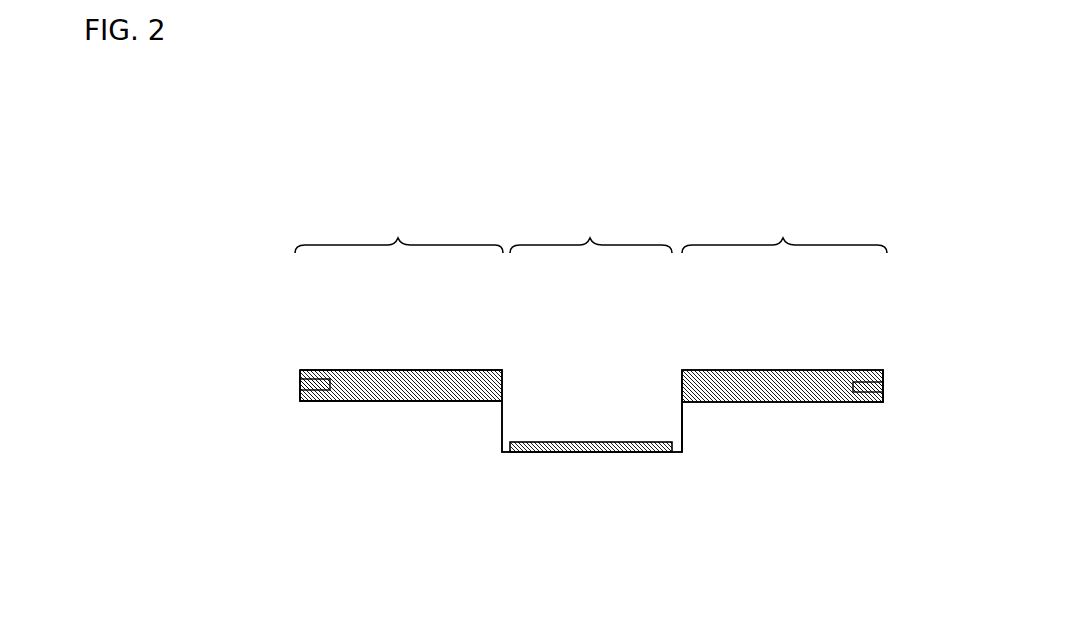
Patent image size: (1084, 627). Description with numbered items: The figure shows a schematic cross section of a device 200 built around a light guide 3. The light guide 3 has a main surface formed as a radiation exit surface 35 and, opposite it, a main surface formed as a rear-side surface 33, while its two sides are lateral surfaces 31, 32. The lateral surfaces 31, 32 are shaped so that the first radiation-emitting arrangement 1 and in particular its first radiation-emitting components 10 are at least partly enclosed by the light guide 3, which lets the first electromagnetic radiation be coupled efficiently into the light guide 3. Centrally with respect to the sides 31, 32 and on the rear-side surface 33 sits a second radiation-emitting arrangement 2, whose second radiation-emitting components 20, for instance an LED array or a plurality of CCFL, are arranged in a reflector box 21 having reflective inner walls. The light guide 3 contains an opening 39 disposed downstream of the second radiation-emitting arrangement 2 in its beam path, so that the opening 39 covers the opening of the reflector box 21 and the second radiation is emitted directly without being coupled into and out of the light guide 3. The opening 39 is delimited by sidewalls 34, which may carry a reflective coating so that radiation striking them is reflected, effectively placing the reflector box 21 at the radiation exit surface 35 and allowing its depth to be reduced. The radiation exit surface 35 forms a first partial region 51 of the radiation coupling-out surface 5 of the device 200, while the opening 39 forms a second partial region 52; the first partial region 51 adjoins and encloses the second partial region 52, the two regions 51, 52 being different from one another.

The device 200 is at (430, 74).
The first radiation-emitting arrangement 1 is at (302, 401).
The second radiation-emitting arrangement 2 is at (545, 452).
The light guide 3 is at (403, 385).
The radiation coupling-out surface 5 is at (745, 370).
The first radiation-emitting components 10 is at (318, 386).
The second radiation-emitting components 20 is at (650, 452).
The reflector box 21 is at (682, 428).
The lateral surface of the light guide 31 is at (298, 370).
The lateral surface of the light guide 32 is at (883, 380).
The rear-side surface 33 is at (425, 402).
The sidewalls 34 is at (681, 385).
The radiation exit surface 35 is at (342, 368).
The opening 39 is at (548, 383).
The first partial region 51 is at (403, 232).
The second partial region 52 is at (590, 232).